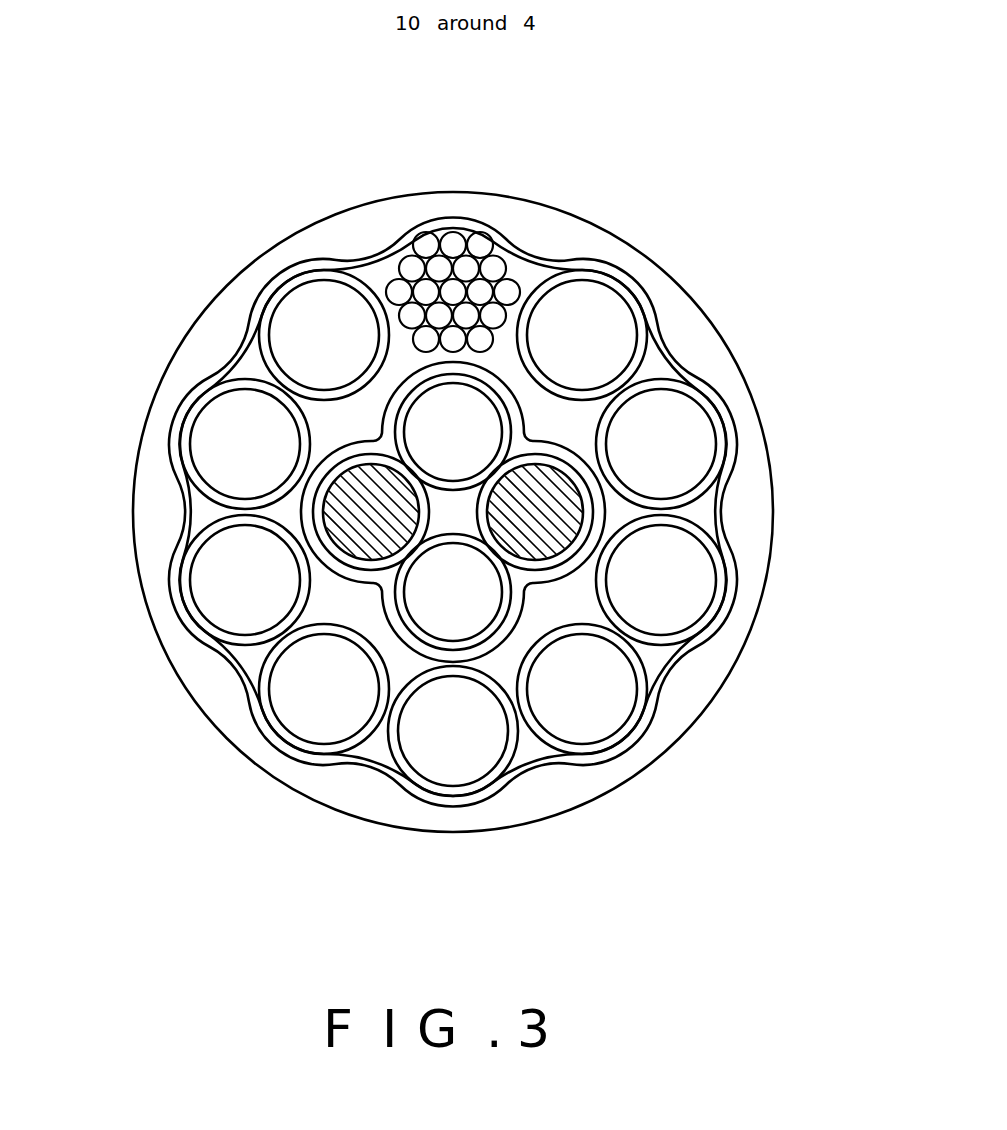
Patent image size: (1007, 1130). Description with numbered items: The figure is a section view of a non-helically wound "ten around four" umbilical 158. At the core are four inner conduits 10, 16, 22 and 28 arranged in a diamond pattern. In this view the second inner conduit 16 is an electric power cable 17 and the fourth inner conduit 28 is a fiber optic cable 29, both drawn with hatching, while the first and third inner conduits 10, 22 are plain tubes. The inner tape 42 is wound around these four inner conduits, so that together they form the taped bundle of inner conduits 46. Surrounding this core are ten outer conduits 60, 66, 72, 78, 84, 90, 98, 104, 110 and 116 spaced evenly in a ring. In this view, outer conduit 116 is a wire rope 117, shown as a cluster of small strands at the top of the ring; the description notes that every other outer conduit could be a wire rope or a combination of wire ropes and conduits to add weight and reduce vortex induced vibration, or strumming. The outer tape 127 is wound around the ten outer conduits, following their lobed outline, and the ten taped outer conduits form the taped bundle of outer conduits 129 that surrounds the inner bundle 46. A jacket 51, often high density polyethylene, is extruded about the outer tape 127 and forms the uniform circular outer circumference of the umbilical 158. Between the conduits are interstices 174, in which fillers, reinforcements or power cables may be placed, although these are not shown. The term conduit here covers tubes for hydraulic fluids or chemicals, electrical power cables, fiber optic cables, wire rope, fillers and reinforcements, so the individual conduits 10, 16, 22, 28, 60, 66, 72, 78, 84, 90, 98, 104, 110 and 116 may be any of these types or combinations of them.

The first inner conduit 10 is at (413, 405).
The second inner conduit 16 is at (313, 523).
The electric power cable 17 is at (340, 520).
The third inner conduit 22 is at (408, 608).
The fourth inner conduit 28 is at (540, 520).
The fiber optic cable 29 is at (562, 533).
The inner tape 42 is at (540, 428).
The taped bundle of inner conduits 46 is at (582, 577).
The jacket 51 is at (357, 228).
The outer conduit 60 is at (640, 325).
The outer conduit 66 is at (703, 411).
The outer conduit 72 is at (705, 572).
The outer conduit 78 is at (612, 722).
The outer conduit 84 is at (467, 808).
The outer conduit 90 is at (326, 598).
The outer conduit 98 is at (193, 600).
The outer conduit 104 is at (214, 432).
The outer conduit 110 is at (298, 288).
The outer conduit 116 is at (505, 238).
The wire rope 117 is at (454, 290).
The outer tape 127 is at (236, 352).
The taped bundle of outer conduits 129 is at (220, 661).
The umbilical 158 is at (647, 205).
The interstices 174 is at (380, 445).